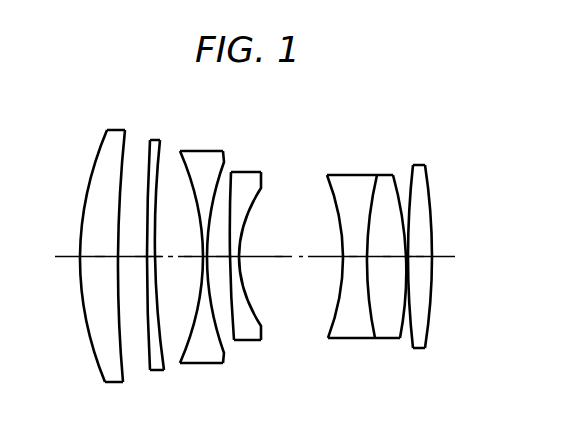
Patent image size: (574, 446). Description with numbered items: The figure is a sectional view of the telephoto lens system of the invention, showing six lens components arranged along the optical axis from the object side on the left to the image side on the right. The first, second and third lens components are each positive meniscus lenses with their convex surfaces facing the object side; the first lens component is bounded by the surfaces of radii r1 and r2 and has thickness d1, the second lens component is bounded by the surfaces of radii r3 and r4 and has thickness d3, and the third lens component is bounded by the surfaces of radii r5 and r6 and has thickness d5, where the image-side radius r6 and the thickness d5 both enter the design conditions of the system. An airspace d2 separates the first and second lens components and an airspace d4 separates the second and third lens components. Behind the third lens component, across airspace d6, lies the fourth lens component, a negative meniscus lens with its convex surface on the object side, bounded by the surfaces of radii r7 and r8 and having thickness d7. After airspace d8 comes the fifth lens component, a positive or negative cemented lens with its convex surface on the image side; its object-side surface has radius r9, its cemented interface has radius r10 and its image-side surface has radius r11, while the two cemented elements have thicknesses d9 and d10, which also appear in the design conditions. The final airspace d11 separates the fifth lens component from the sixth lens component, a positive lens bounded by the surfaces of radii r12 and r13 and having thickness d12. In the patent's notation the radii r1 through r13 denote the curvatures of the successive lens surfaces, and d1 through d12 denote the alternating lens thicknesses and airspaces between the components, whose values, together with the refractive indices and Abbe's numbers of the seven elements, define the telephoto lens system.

The radius of curvature of object-side surface of first lens component r1 is at (104, 379).
The radius of curvature of image-side surface of first lens component r2 is at (123, 381).
The radius of curvature of object-side surface of second lens component r3 is at (150, 369).
The radius of curvature of image-side surface of second lens component r4 is at (163, 369).
The radius of curvature of object-side surface of third lens component r5 is at (181, 362).
The radius of curvature of image-side surface of third lens component r6 is at (221, 362).
The radius of curvature of object-side surface of fourth lens component r7 is at (231, 338).
The radius of curvature of image-side surface of fourth lens component r8 is at (260, 328).
The radius of curvature of object-side surface of fifth lens component r9 is at (328, 336).
The radius of curvature of cemented surface of fifth lens component r10 is at (372, 322).
The radius of curvature of image-side surface of fifth lens component r11 is at (398, 336).
The radius of curvature of object-side surface of sixth lens component r12 is at (412, 345).
The radius of curvature of image-side surface of sixth lens component r13 is at (426, 346).
The thickness of first lens component d1 is at (100, 256).
The airspace between first and second lens components d2 is at (140, 256).
The thickness of second lens component d3 is at (148, 256).
The airspace between second and third lens components d4 is at (156, 256).
The thickness of third lens component d5 is at (188, 256).
The airspace between third and fourth lens components d6 is at (220, 256).
The thickness of fourth lens component d7 is at (227, 256).
The airspace between fourth and fifth lens components d8 is at (279, 256).
The thickness of first element of fifth lens component d9 is at (353, 256).
The thickness of second element of fifth lens component d10 is at (387, 256).
The airspace between fifth and sixth lens components d11 is at (408, 256).
The thickness of sixth lens component d12 is at (420, 256).